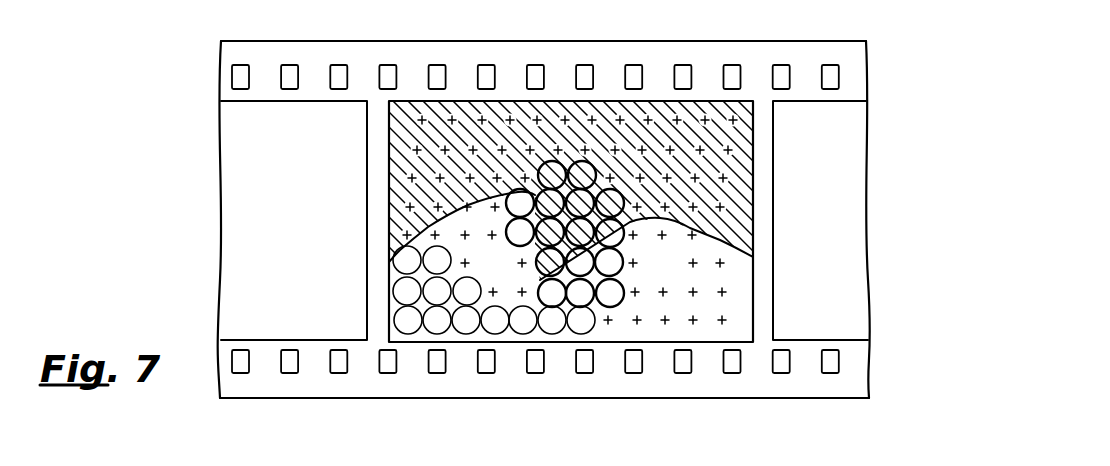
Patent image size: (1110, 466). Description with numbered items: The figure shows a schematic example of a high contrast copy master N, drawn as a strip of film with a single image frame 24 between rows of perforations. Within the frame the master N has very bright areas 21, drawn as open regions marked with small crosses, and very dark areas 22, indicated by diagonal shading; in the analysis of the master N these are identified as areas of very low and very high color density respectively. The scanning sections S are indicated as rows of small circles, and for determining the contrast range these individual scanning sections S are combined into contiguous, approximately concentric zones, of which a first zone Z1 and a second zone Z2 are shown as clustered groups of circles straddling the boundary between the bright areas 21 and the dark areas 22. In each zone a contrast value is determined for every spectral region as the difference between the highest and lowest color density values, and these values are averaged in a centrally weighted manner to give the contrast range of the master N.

The copy master N is at (842, 398).
The image frame of the negative 24 is at (571, 283).
The very dark areas 22 is at (685, 147).
The very bright areas 21 is at (707, 313).
The scanning sections S is at (463, 333).
The zone Z1 is at (593, 237).
The zone Z2 is at (546, 231).